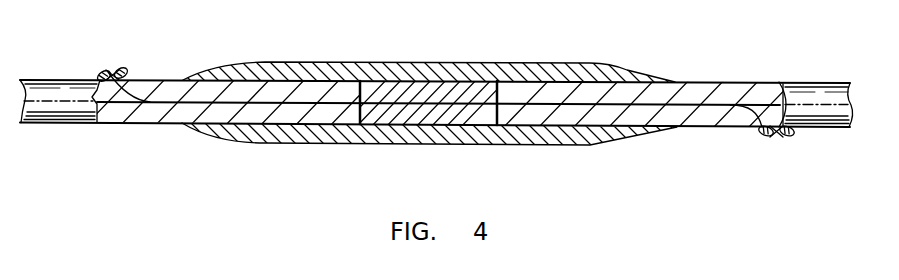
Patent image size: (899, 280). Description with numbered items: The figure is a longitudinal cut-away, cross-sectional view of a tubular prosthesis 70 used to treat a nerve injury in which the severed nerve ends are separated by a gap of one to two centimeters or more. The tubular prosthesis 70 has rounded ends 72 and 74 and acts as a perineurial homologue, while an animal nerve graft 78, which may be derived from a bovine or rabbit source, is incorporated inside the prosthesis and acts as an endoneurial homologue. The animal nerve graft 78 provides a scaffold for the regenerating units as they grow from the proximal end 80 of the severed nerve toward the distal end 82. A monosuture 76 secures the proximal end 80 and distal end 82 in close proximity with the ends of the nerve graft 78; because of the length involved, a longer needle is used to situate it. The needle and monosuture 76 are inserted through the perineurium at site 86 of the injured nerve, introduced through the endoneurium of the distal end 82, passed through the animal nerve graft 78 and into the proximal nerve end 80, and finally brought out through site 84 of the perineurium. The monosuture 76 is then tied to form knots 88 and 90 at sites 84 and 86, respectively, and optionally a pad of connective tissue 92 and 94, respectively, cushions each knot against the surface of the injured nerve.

The tubular prosthesis 70 is at (468, 62).
The rounded end 72 is at (192, 77).
The rounded end 74 is at (665, 82).
The monosuture 76 is at (273, 101).
The animal nerve graft 78 is at (405, 88).
The proximal end 80 is at (360, 116).
The distal end 82 is at (499, 101).
The site of the perineurium 84 is at (100, 82).
The site of the perineurium 86 is at (752, 120).
The knot 88 is at (121, 70).
The knot 90 is at (780, 138).
The pad of connective tissue 92 is at (112, 70).
The pad of connective tissue 94 is at (797, 134).